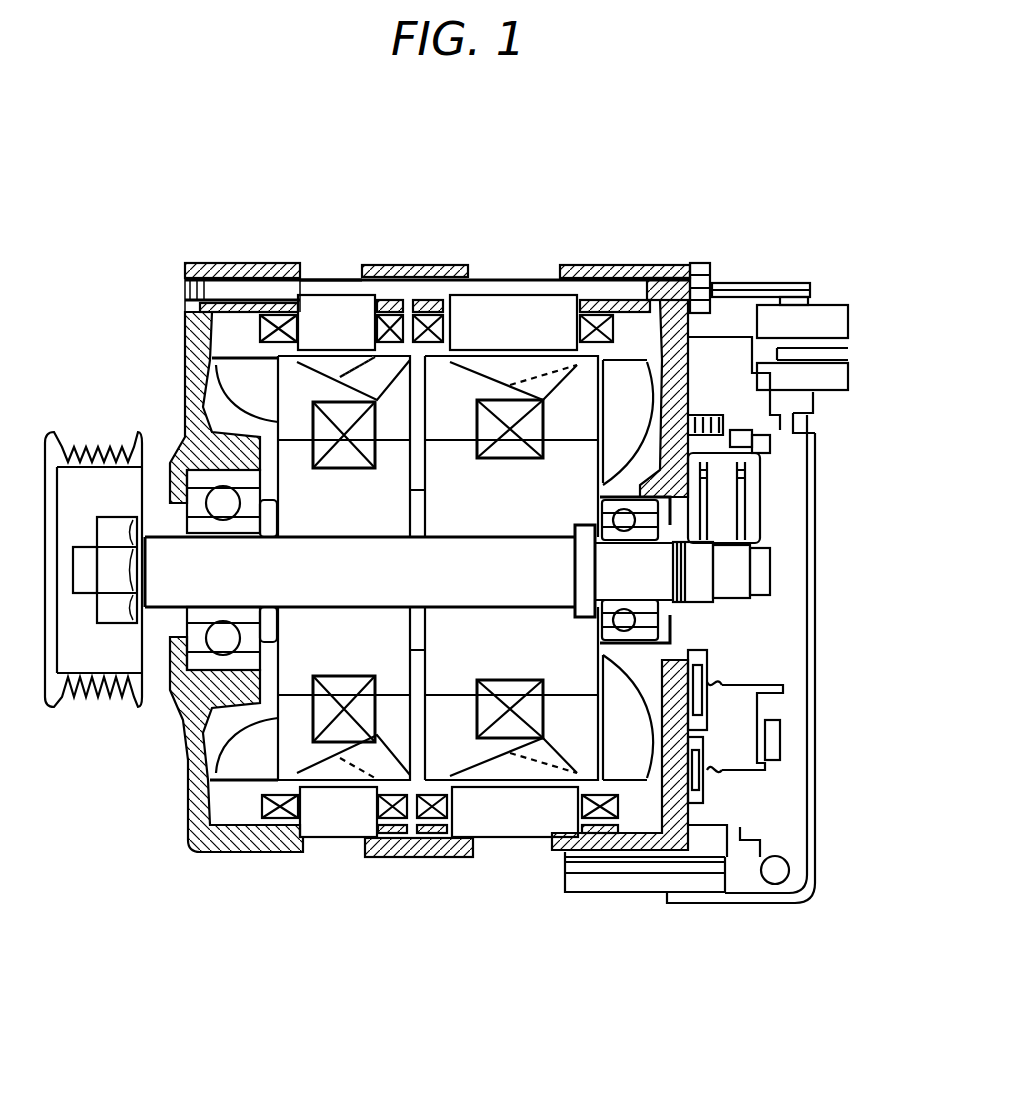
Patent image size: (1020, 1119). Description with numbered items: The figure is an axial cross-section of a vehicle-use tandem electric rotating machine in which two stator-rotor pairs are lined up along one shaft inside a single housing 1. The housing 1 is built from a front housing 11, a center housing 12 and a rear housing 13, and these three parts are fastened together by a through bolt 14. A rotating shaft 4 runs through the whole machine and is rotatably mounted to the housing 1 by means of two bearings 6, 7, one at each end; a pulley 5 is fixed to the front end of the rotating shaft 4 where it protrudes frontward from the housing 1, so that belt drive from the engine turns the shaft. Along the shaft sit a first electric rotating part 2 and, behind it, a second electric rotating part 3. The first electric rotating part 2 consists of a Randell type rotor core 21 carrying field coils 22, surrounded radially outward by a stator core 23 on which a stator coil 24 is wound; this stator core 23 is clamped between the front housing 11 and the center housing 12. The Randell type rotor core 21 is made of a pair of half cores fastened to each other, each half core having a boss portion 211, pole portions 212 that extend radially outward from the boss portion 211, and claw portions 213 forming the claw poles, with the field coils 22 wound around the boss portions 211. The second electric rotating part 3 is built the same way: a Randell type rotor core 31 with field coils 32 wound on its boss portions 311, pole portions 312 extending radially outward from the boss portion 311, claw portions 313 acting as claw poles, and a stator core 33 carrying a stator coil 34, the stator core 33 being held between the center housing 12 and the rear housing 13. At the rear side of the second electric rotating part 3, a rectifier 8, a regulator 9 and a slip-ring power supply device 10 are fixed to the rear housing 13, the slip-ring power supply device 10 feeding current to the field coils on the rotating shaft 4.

The housing 1 is at (226, 265).
The first electric rotating part 2 is at (327, 497).
The second electric rotating part 3 is at (515, 483).
The rotating shaft 4 is at (343, 580).
The pulley 5 is at (75, 700).
The bearing 6 is at (217, 655).
The bearing 7 is at (663, 535).
The rectifier 8 is at (718, 713).
The regulator 9 is at (731, 334).
The slip-ring power supply device 10 is at (757, 517).
The front housing 11 is at (185, 352).
The center housing 12 is at (410, 265).
The rear housing 13 is at (618, 272).
The through bolt 14 is at (347, 282).
The Randell type rotor core 21 is at (284, 644).
The field coils 22 is at (345, 455).
The stator core 23 is at (320, 305).
The stator coil 24 is at (387, 322).
The Randell type rotor core 31 is at (534, 664).
The field coils 32 is at (505, 448).
The stator core 33 is at (525, 318).
The stator coil 34 is at (430, 322).
The boss portion 211 is at (292, 657).
The pole portions 212 is at (297, 723).
The claw portions 213 is at (335, 778).
The boss portion 311 is at (448, 657).
The pole portions 312 is at (458, 718).
The claw portions 313 is at (520, 778).